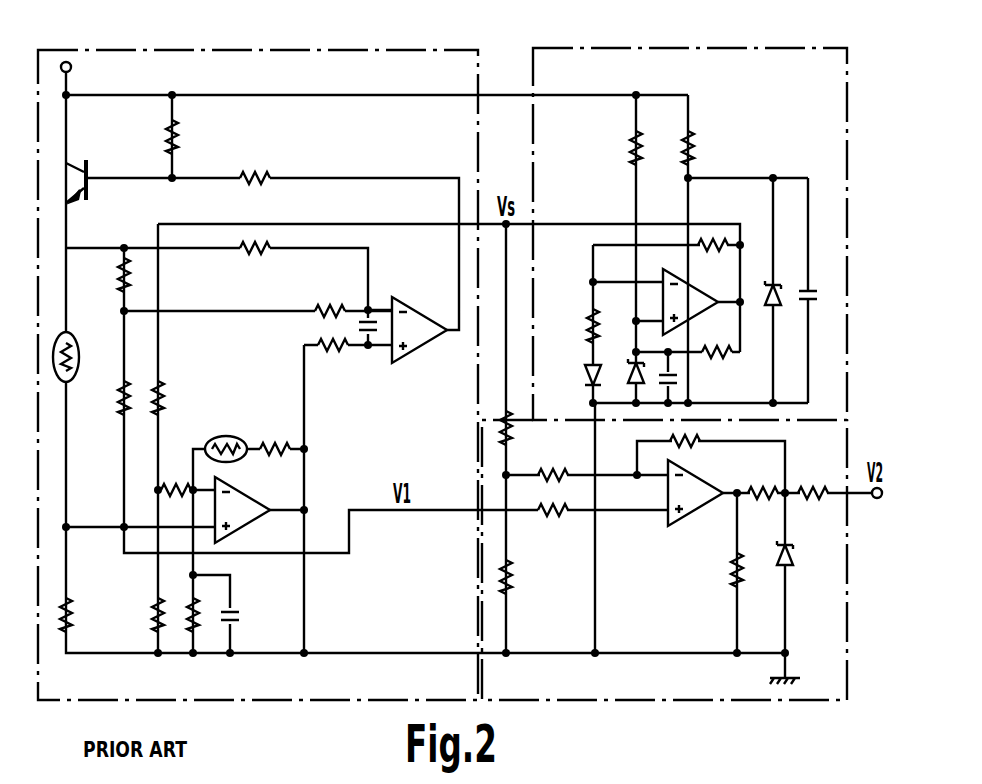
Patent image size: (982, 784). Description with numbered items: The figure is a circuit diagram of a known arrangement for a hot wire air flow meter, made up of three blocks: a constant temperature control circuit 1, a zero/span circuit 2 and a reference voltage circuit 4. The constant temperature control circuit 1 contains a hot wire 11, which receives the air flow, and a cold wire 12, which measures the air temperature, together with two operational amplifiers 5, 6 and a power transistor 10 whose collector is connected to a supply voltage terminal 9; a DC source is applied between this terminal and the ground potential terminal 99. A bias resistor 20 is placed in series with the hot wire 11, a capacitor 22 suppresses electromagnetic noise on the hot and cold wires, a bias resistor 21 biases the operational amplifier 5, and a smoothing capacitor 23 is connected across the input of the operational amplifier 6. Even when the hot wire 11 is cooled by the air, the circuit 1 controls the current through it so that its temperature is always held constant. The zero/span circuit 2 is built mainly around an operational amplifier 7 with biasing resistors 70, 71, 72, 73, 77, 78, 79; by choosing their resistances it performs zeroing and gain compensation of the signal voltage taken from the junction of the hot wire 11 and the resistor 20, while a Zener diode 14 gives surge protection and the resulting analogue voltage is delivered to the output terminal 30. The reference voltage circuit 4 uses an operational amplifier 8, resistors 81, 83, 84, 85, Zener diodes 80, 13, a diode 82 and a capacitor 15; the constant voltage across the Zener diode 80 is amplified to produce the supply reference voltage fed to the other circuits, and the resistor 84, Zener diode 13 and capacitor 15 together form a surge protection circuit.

The constant temperature control circuit 1 is at (298, 50).
The zero/span circuit 2 is at (847, 680).
The reference voltage circuit 4 is at (698, 50).
The operational amplifier 5 is at (247, 503).
The operational amplifier 6 is at (402, 300).
The operational amplifier 7 is at (695, 515).
The operational amplifier 8 is at (718, 298).
The supply voltage terminal 9 is at (72, 67).
The power transistor 10 is at (92, 168).
The hot wire 11 is at (78, 338).
The cold wire 12 is at (222, 437).
The Zener diode 13 is at (777, 280).
The Zener diode 14 is at (793, 562).
The capacitor 15 is at (812, 290).
The bias resistor 20 is at (72, 605).
The bias resistor 21 is at (120, 412).
The capacitor 22 is at (238, 612).
The smoothing capacitor 23 is at (360, 324).
The terminal 30 is at (878, 500).
The biasing resistor 70 is at (700, 445).
The biasing resistor 71 is at (735, 582).
The biasing resistor 72 is at (818, 490).
The biasing resistor 73 is at (750, 500).
The biasing resistor 77 is at (512, 570).
The biasing resistor 78 is at (503, 430).
The biasing resistor 79 is at (545, 474).
The Zener diode 80 is at (645, 362).
The resistor 81 is at (592, 312).
The diode 82 is at (590, 366).
The resistor 83 is at (718, 355).
The resistor 84 is at (692, 150).
The resistor 85 is at (632, 143).
The ground potential terminal 99 is at (778, 678).